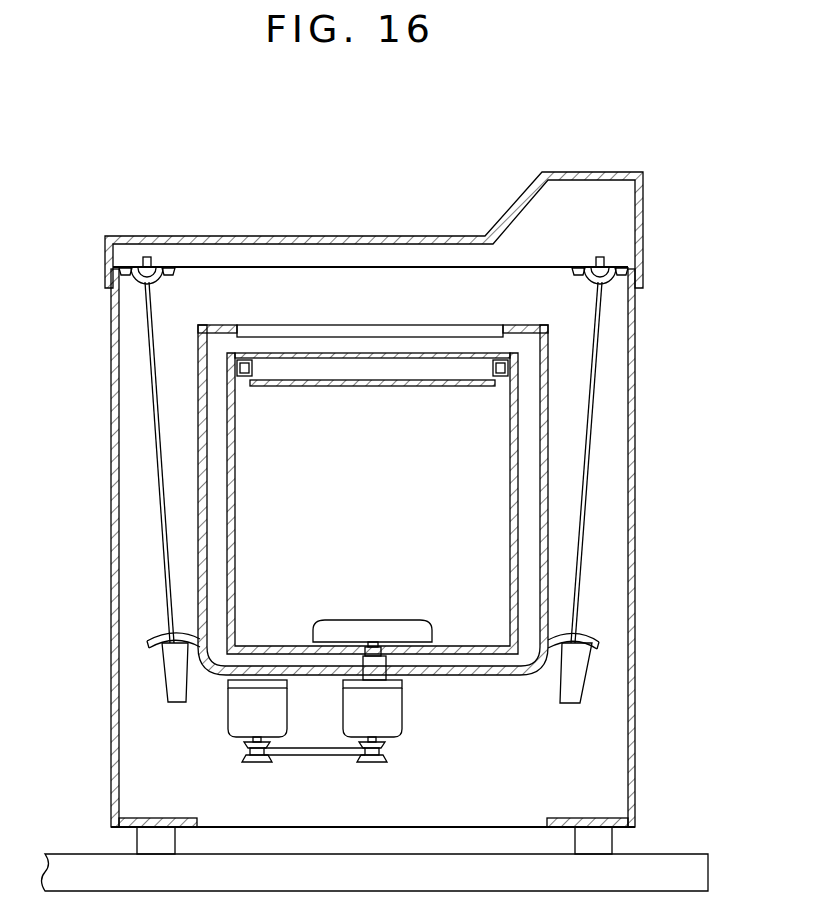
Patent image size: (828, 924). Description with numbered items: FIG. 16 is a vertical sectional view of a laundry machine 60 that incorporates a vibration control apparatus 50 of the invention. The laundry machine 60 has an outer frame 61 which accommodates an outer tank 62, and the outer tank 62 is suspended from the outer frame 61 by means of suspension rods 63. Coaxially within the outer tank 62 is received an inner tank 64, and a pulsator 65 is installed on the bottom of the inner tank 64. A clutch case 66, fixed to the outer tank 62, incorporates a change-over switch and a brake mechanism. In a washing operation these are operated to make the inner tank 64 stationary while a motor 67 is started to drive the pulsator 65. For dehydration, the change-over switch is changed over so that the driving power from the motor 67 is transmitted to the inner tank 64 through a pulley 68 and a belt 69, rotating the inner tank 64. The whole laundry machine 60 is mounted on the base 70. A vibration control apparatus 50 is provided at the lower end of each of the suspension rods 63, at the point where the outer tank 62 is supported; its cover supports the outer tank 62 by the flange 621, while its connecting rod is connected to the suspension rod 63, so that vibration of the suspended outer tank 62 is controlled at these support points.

The laundry machine 60 is at (236, 232).
The outer frame 61 is at (637, 304).
The outer tank 62 is at (549, 348).
The flange 621 is at (590, 634).
The suspension rods 63 is at (592, 489).
The inner tank 64 is at (510, 455).
The pulsator 65 is at (375, 620).
The clutch case 66 is at (402, 714).
The motor 67 is at (228, 724).
The pulley 68 is at (240, 758).
The belt 69 is at (318, 757).
The base 70 is at (682, 853).
The vibration control apparatus 50 is at (572, 703).